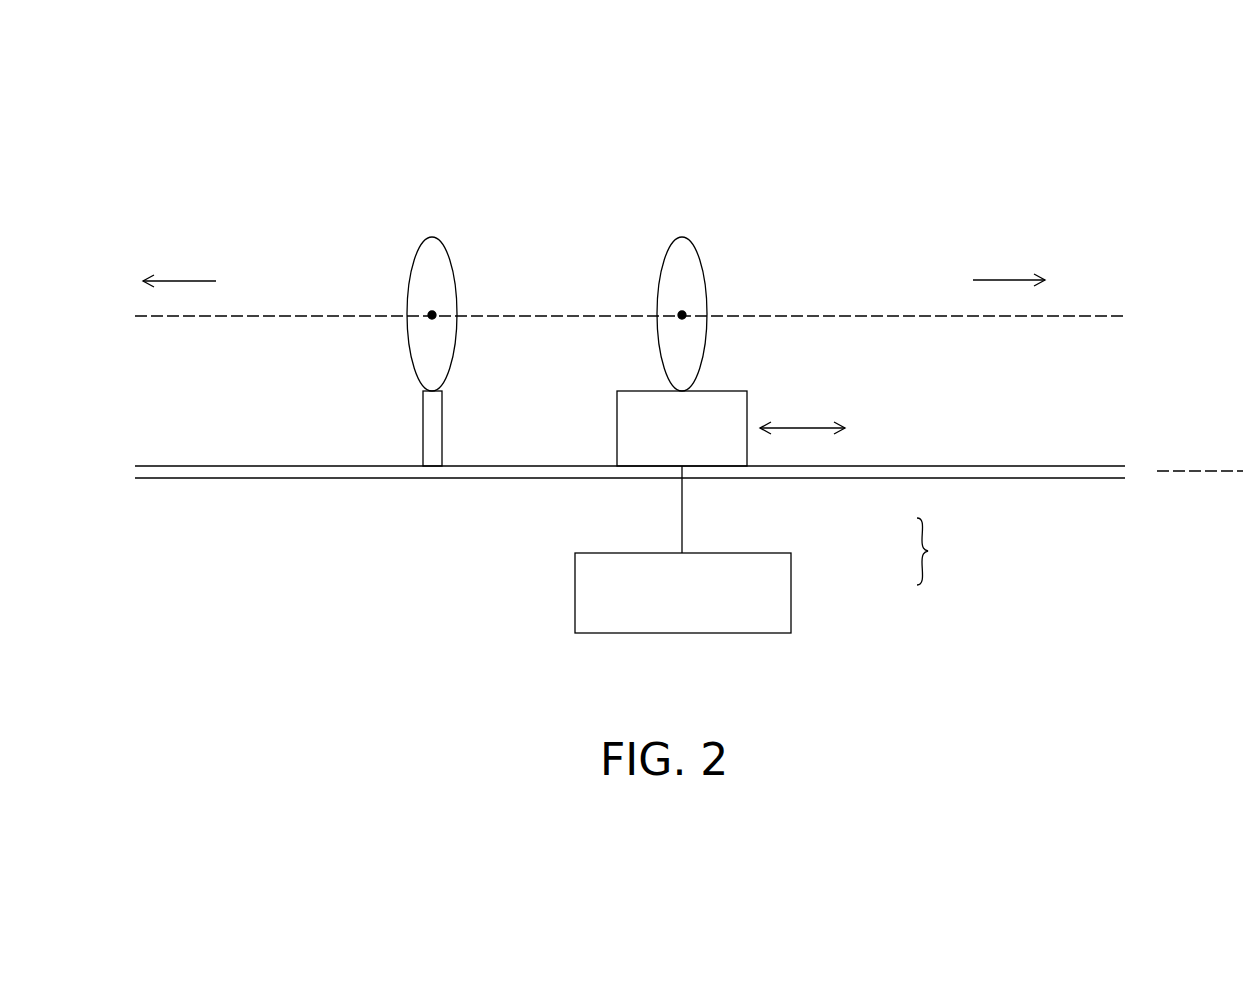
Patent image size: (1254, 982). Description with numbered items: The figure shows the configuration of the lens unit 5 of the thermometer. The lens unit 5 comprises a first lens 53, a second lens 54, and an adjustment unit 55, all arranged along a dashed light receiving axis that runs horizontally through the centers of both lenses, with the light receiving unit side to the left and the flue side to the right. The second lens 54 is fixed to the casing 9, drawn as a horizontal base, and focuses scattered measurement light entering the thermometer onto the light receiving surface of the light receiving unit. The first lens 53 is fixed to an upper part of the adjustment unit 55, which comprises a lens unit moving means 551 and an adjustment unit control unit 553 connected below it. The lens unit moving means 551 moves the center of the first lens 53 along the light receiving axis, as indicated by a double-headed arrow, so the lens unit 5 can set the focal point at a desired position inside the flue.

The lens unit 5 is at (883, 102).
The casing 9 is at (475, 470).
The first lens 53 is at (690, 257).
The second lens 54 is at (440, 257).
The adjustment unit 55 is at (941, 551).
The lens unit moving means 551 is at (730, 445).
The adjustment unit control unit 553 is at (782, 578).